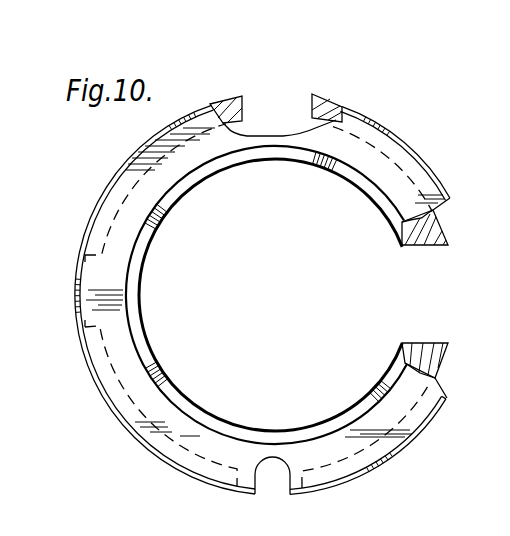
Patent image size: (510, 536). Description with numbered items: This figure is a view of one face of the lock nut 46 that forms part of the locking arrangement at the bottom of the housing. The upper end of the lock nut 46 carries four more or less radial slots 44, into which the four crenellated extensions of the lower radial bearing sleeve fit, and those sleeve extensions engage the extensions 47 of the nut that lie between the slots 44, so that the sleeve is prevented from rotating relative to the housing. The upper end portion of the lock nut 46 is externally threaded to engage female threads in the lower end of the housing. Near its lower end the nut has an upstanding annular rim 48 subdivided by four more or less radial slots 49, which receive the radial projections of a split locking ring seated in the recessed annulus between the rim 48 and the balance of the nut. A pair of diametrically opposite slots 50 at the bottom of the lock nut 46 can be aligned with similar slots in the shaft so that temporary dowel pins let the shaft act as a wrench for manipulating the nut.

The radial slots 44 is at (420, 332).
The lock nut 46 is at (420, 432).
The extensions 47 is at (404, 233).
The upstanding annular rim 48 is at (327, 105).
The radial slots 49 is at (250, 104).
The slots 50 is at (273, 478).